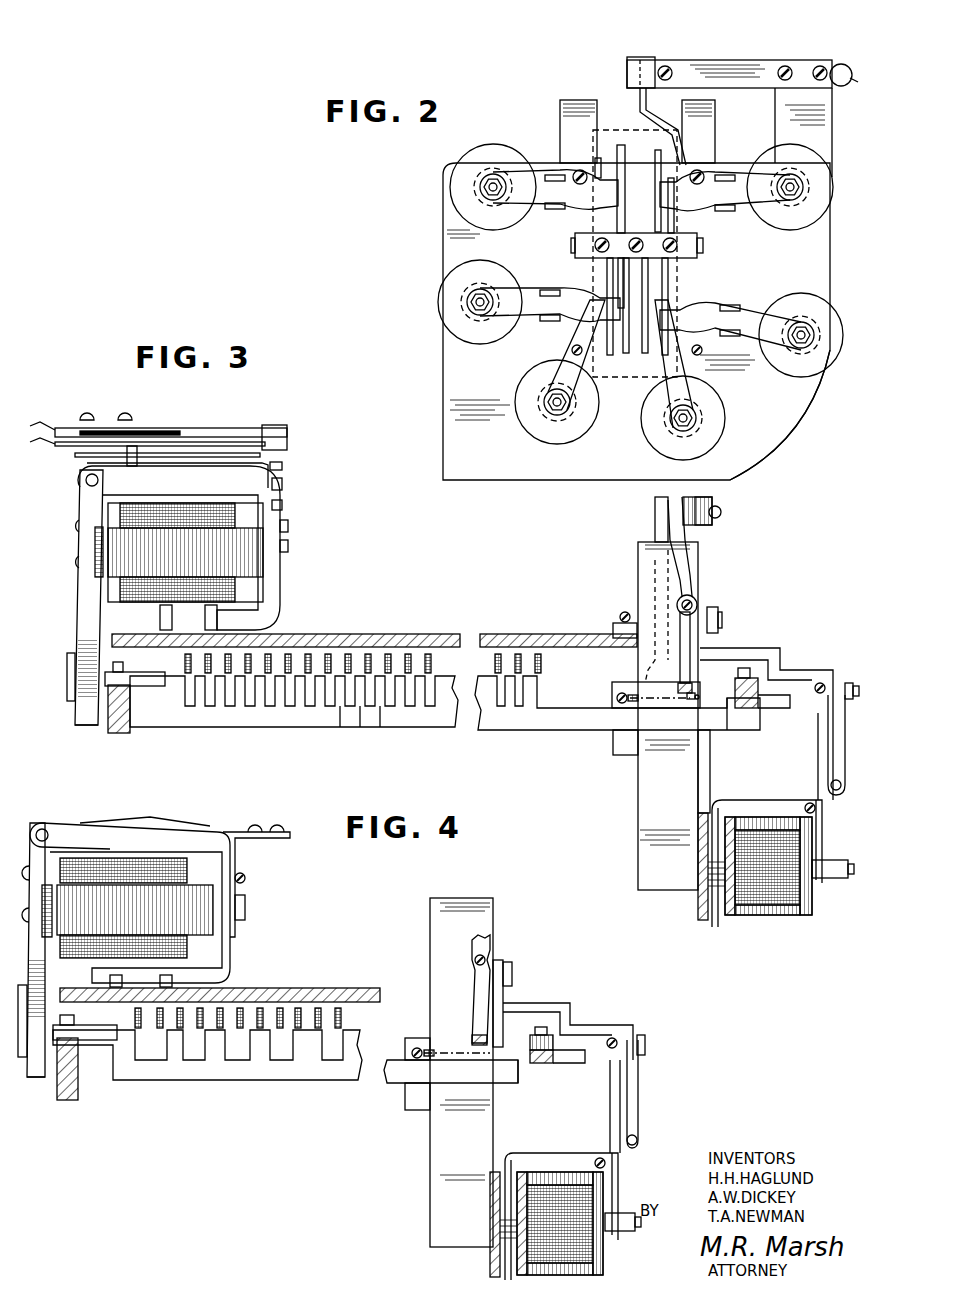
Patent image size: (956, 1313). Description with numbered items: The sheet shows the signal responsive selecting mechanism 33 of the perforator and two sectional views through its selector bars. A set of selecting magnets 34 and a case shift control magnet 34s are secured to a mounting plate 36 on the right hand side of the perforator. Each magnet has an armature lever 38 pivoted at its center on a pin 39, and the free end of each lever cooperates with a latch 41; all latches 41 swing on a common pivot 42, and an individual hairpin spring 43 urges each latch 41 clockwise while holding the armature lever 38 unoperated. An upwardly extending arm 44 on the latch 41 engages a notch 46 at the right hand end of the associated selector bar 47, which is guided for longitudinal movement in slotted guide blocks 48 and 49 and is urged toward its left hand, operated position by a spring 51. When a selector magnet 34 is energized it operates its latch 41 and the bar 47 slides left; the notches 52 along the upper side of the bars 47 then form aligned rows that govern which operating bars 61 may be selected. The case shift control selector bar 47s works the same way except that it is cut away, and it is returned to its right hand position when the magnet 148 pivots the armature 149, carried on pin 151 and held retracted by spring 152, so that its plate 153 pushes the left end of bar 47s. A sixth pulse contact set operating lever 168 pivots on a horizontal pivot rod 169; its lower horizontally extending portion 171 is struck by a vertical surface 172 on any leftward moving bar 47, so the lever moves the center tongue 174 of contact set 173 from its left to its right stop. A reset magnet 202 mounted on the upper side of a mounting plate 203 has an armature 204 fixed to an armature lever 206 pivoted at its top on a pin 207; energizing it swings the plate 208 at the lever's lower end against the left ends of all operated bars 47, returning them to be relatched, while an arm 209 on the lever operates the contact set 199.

In FIG. 2, the selecting mechanism 33 is at (440, 388).
In FIG. 2, the selecting magnet 34 is at (505, 150).
In FIG. 3, the selecting magnet 34 is at (770, 918).
In FIG. 2, the case shift control magnet 34s is at (446, 320).
In FIG. 4, the case shift control magnet 34s is at (582, 1263).
In FIG. 2, the mounting plate 36 is at (778, 424).
In FIG. 3, the mounting plate 36 is at (706, 921).
In FIG. 4, the mounting plate 36 is at (496, 1132).
In FIG. 2, the armature lever 38 is at (575, 210).
In FIG. 3, the armature lever 38 is at (822, 830).
In FIG. 4, the armature lever 38 is at (612, 1170).
In FIG. 2, the pin 39 is at (742, 222).
In FIG. 3, the pin 39 is at (806, 804).
In FIG. 4, the pin 39 is at (596, 1158).
In FIG. 3, the latch 41 is at (816, 718).
In FIG. 4, the latch 41 is at (608, 1066).
In FIG. 3, the common pivot 42 is at (826, 683).
In FIG. 2, the hairpin spring 43 is at (632, 388).
In FIG. 3, the hairpin spring 43 is at (846, 742).
In FIG. 4, the hairpin spring 43 is at (640, 1100).
In FIG. 3, the upwardly extending arm 44 is at (785, 710).
In FIG. 4, the upwardly extending arm 44 is at (576, 1066).
In FIG. 3, the notch 46 is at (746, 710).
In FIG. 4, the notch 46 is at (541, 1065).
In FIG. 3, the selector bar 47 is at (418, 712).
In FIG. 4, the case shift control selector bar 47s is at (247, 1082).
In FIG. 3, the slotted guide block 48 is at (125, 732).
In FIG. 4, the slotted guide block 48 is at (80, 1090).
In FIG. 3, the slotted guide block 49 is at (738, 716).
In FIG. 4, the slotted guide block 49 is at (533, 1068).
In FIG. 3, the spring 51 is at (630, 694).
In FIG. 4, the spring 51 is at (424, 1051).
In FIG. 3, the notch 52 is at (342, 712).
In FIG. 3, the operating bar 61 is at (495, 660).
In FIG. 4, the operating bar 61 is at (297, 1018).
In FIG. 4, the magnet 148 is at (180, 880).
In FIG. 4, the armature 149 is at (40, 956).
In FIG. 4, the pin 151 is at (42, 828).
In FIG. 4, the spring 152 is at (120, 822).
In FIG. 4, the plate 153 is at (38, 1080).
In FIG. 2, the sixth pulse contact set operating lever 168 is at (660, 128).
In FIG. 3, the sixth pulse contact set operating lever 168 is at (694, 574).
In FIG. 4, the sixth pulse contact set operating lever 168 is at (486, 942).
In FIG. 2, the horizontal pivot rod 169 is at (632, 160).
In FIG. 3, the horizontal pivot rod 169 is at (697, 603).
In FIG. 3, the horizontally extending portion 171 is at (684, 682).
In FIG. 4, the horizontally extending portion 171 is at (474, 1040).
In FIG. 3, the vertical surface 172 is at (692, 692).
In FIG. 2, the contact set 173 is at (748, 57).
In FIG. 3, the contact set 173 is at (722, 522).
In FIG. 3, the center tongue 174 is at (700, 496).
In FIG. 3, the contact set 199 is at (248, 432).
In FIG. 3, the reset magnet 202 is at (250, 588).
In FIG. 3, the mounting plate 203 is at (360, 632).
In FIG. 4, the mounting plate 203 is at (300, 998).
In FIG. 3, the armature 204 is at (96, 547).
In FIG. 3, the armature lever 206 is at (80, 624).
In FIG. 3, the pin 207 is at (76, 480).
In FIG. 3, the plate 208 is at (88, 726).
In FIG. 3, the arm 209 is at (255, 468).